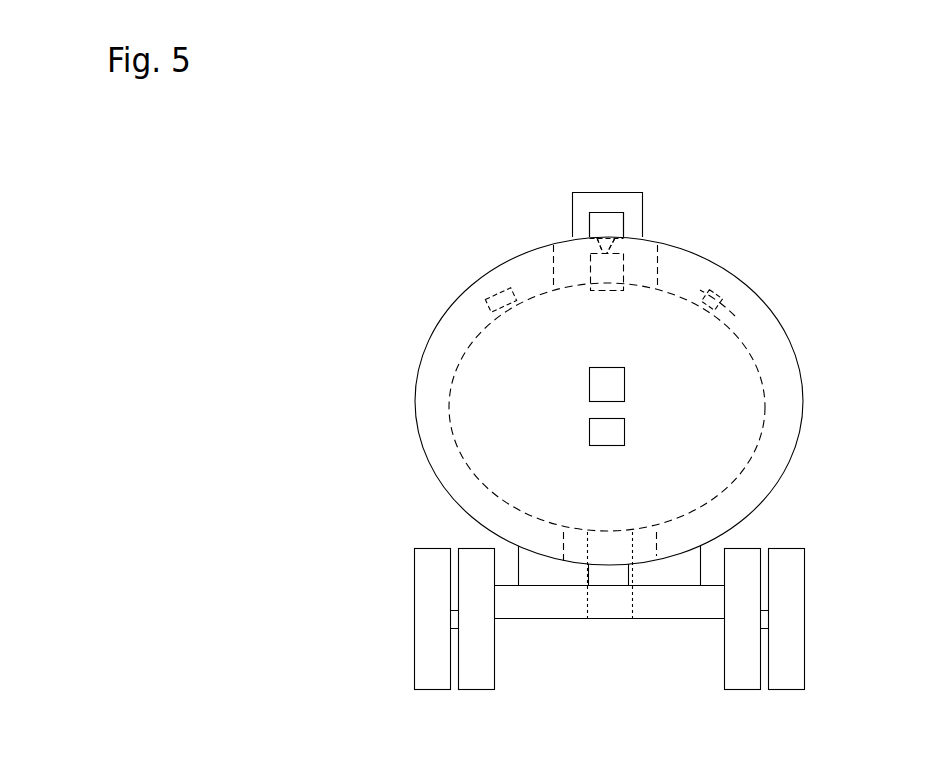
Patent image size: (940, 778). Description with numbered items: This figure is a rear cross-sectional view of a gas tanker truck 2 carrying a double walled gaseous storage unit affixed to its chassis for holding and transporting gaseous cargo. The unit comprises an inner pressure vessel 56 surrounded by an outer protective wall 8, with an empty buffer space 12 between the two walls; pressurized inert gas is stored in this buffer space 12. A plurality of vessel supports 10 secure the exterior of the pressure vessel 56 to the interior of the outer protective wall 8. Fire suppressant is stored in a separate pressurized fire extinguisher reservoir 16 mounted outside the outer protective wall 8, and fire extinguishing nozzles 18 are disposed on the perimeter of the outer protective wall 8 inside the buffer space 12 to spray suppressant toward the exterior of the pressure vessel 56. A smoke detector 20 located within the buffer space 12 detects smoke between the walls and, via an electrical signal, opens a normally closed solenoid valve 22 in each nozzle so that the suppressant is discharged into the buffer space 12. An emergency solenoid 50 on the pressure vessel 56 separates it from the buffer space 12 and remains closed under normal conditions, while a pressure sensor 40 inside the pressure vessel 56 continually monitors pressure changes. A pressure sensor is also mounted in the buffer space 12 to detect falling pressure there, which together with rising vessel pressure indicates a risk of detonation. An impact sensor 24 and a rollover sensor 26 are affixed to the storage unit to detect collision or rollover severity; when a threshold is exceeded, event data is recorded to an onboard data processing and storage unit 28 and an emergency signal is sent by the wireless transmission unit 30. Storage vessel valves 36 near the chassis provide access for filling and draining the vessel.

The truck 2 is at (627, 618).
The outer protective wall 8 is at (803, 391).
The vessel supports 10 is at (647, 283).
The buffer space 12 is at (768, 460).
The fire extinguisher reservoir 16 is at (597, 192).
The fire extinguishing nozzles 18 is at (600, 248).
The smoke detector 20 is at (613, 290).
The solenoid valve 22 is at (606, 245).
The impact sensor 24 is at (616, 430).
The rollover sensor 26 is at (597, 388).
The data processing and storage unit 28 is at (623, 226).
The wireless transmission unit 30 is at (607, 225).
The storage vessel valves 36 is at (597, 612).
The pressure sensor 40 is at (495, 297).
The emergency solenoid 50 is at (716, 290).
The pressure vessel 56 is at (737, 331).